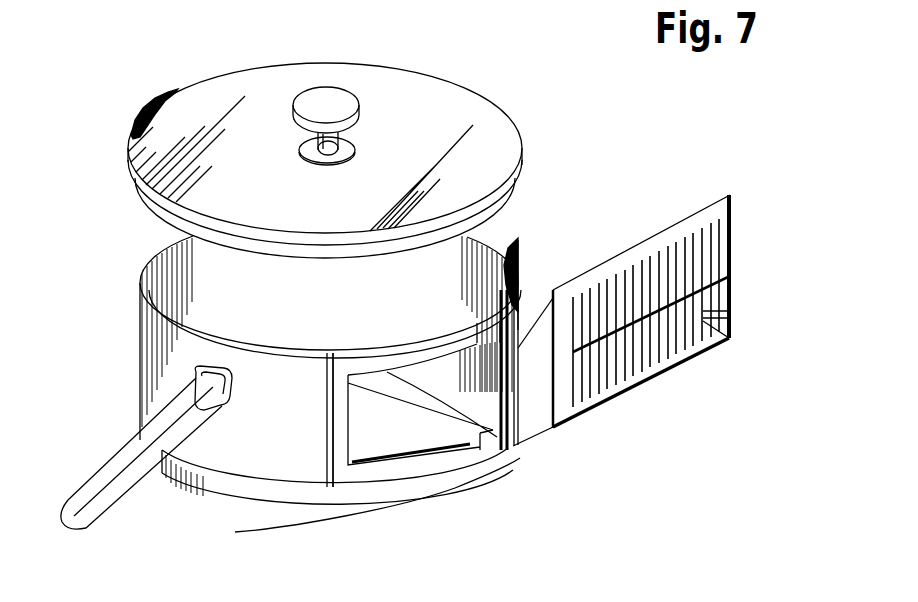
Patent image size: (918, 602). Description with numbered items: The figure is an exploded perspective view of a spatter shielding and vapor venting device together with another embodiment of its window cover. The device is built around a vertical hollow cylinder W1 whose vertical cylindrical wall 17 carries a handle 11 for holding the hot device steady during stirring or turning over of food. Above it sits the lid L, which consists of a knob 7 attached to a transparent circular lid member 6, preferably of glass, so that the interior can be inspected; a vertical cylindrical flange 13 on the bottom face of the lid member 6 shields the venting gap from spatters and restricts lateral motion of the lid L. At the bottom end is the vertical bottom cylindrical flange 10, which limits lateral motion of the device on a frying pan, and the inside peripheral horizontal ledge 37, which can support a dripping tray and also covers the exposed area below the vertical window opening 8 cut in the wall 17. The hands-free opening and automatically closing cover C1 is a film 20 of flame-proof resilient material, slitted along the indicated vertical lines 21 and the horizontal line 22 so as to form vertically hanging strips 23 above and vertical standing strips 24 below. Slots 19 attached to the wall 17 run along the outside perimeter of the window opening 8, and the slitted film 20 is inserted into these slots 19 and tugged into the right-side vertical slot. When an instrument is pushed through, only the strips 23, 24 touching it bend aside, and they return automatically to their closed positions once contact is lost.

The lid member 6 is at (510, 134).
The knob 7 is at (348, 92).
The window opening 8 is at (500, 455).
The vertical bottom cylindrical flange 10 is at (440, 494).
The handle 11 is at (116, 499).
The vertical cylindrical flange 13 is at (513, 192).
The vertical cylindrical wall 17 is at (520, 312).
The slots 19 is at (340, 425).
The film 20 is at (610, 400).
The vertical lines 21 is at (731, 338).
The horizontal line 22 is at (703, 264).
The vertically hanging strips 23 is at (703, 243).
The vertical standing strips 24 is at (703, 318).
The inside peripheral horizontal ledge 37 is at (553, 298).
The lid L is at (170, 82).
The vertical hollow cylinder W1 is at (131, 347).
The window cover C1 is at (677, 380).